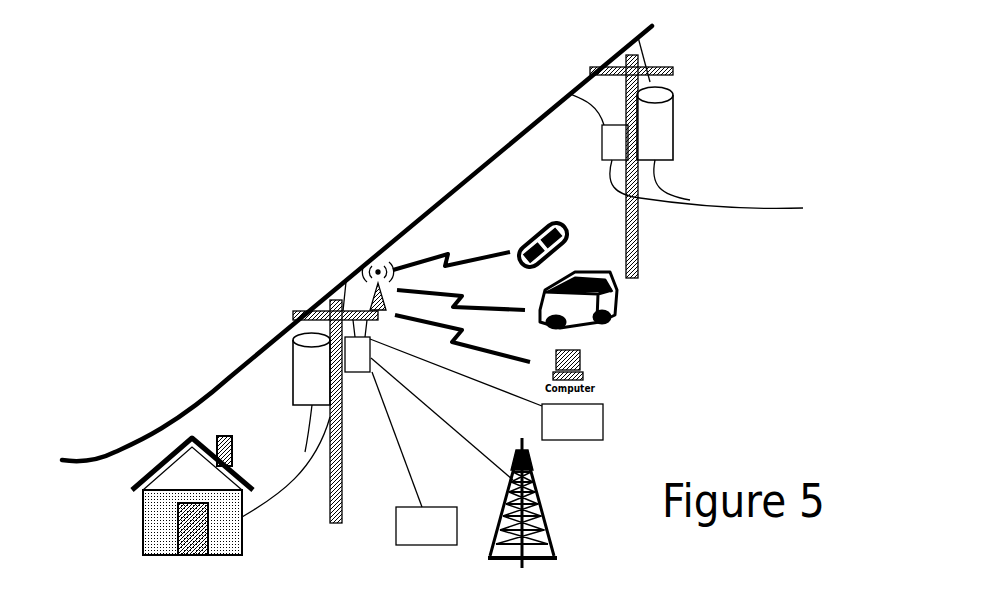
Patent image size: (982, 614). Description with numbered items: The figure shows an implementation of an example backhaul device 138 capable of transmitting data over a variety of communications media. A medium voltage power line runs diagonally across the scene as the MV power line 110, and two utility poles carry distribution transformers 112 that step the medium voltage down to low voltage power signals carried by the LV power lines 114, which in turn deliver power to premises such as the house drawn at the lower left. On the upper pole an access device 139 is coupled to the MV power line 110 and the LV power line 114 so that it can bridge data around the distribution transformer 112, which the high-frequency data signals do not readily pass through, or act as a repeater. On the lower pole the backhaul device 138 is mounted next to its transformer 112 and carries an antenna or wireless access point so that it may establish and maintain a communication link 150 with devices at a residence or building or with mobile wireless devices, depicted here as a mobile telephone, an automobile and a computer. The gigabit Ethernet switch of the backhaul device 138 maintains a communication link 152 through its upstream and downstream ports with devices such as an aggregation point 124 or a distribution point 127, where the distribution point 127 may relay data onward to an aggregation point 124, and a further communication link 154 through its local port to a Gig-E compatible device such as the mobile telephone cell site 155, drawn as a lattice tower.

The MV power line 110 is at (465, 182).
The distribution transformer 112 is at (673, 125).
The LV power line 114 is at (703, 207).
The backhaul device 138 is at (355, 372).
The access device 139 is at (602, 142).
The communication link 150 is at (475, 258).
The communication link 152 is at (487, 385).
The communication link 154 is at (458, 433).
The mobile telephone cell site 155 is at (535, 505).
The aggregation point 124 is at (598, 423).
The distribution point 127 is at (448, 544).